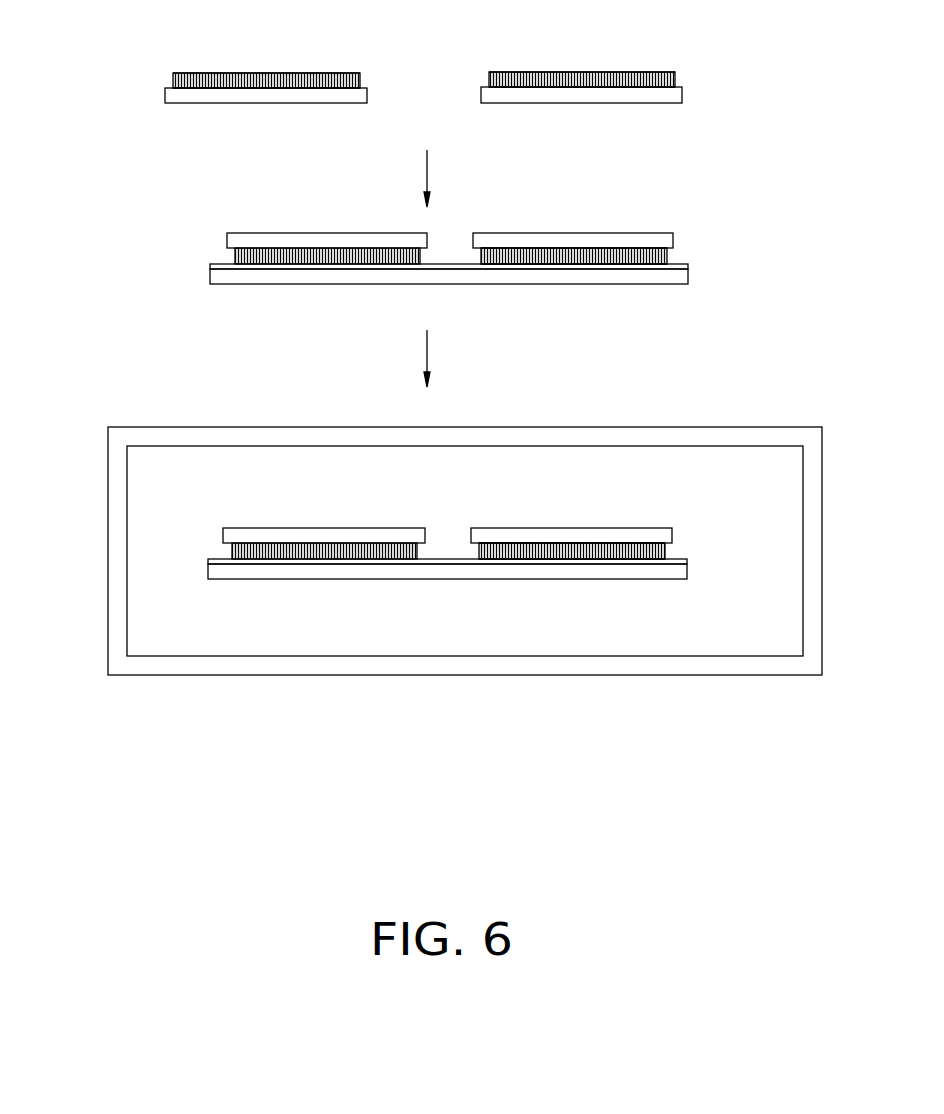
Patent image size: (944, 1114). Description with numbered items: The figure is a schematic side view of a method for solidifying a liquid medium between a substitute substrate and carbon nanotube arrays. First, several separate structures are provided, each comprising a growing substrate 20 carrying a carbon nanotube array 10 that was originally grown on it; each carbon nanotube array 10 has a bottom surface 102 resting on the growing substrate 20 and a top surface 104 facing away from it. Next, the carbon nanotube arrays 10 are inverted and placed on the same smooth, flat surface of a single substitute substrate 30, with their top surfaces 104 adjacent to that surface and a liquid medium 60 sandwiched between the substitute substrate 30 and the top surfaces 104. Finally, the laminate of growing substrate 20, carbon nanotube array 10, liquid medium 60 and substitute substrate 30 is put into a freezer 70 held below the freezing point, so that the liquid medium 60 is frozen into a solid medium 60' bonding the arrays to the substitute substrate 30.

The carbon nanotube array 10 is at (343, 73).
The growing substrate 20 is at (363, 92).
The substitute substrate 30 is at (680, 277).
The liquid medium 60 is at (477, 267).
The solid medium 60' is at (543, 555).
The freezer 70 is at (717, 668).
The bottom surface 102 is at (197, 88).
The top surface 104 is at (187, 73).